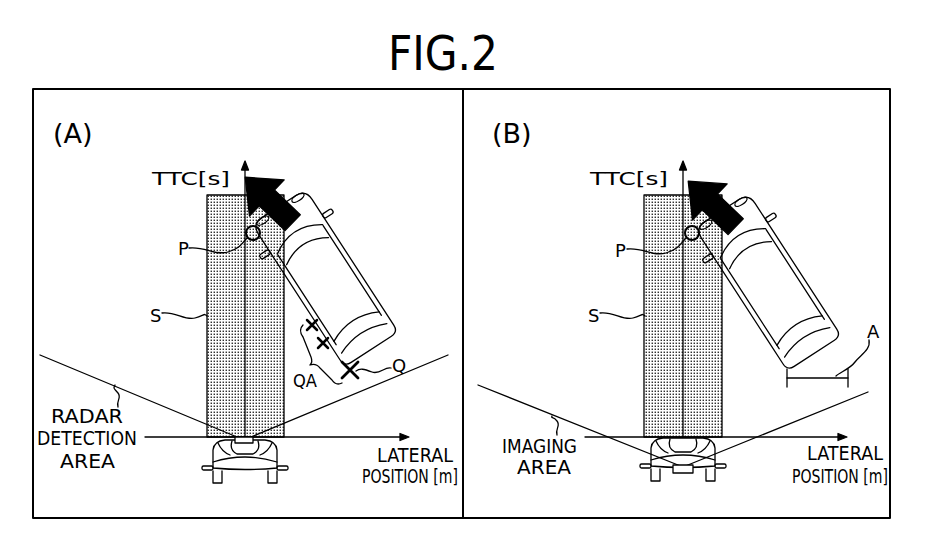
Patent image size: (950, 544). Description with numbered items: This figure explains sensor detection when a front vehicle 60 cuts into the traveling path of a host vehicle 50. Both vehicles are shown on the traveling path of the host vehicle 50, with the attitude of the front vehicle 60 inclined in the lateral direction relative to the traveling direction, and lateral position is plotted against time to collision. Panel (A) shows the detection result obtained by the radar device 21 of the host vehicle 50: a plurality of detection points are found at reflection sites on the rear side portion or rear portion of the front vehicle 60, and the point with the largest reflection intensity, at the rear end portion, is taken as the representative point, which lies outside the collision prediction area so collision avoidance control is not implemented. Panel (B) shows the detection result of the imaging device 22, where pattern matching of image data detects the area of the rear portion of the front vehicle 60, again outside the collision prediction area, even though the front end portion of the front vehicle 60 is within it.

The radar device 21 is at (213, 463).
The imaging device 22 is at (683, 474).
The host vehicle 50 is at (278, 470).
The front vehicle 60 is at (355, 258).